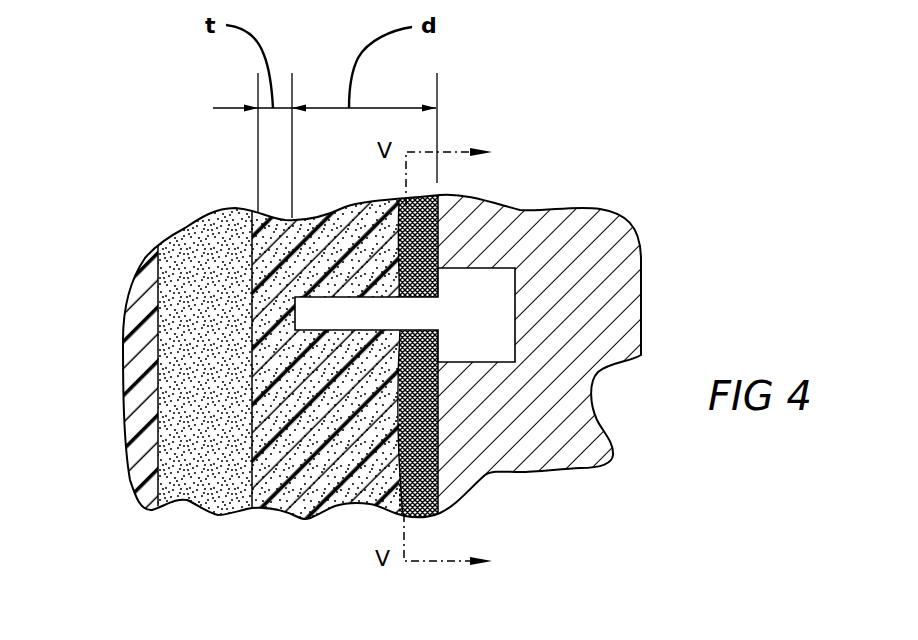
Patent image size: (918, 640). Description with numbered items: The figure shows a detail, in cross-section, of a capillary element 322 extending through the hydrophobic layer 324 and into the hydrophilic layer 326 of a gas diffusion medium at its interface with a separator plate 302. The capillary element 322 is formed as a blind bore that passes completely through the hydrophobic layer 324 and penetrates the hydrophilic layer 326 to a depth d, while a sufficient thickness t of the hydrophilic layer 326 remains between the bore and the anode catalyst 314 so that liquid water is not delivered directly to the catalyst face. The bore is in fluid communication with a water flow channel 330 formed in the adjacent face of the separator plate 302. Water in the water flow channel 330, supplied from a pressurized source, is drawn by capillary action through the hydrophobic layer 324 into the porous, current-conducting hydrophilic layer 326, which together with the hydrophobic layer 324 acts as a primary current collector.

The separator plate 302 is at (617, 280).
The anode catalyst 314 is at (187, 498).
The capillary element 322 is at (501, 384).
The hydrophobic layer 324 is at (420, 511).
The hydrophilic layer 326 is at (290, 490).
The water flow channel 330 is at (483, 256).